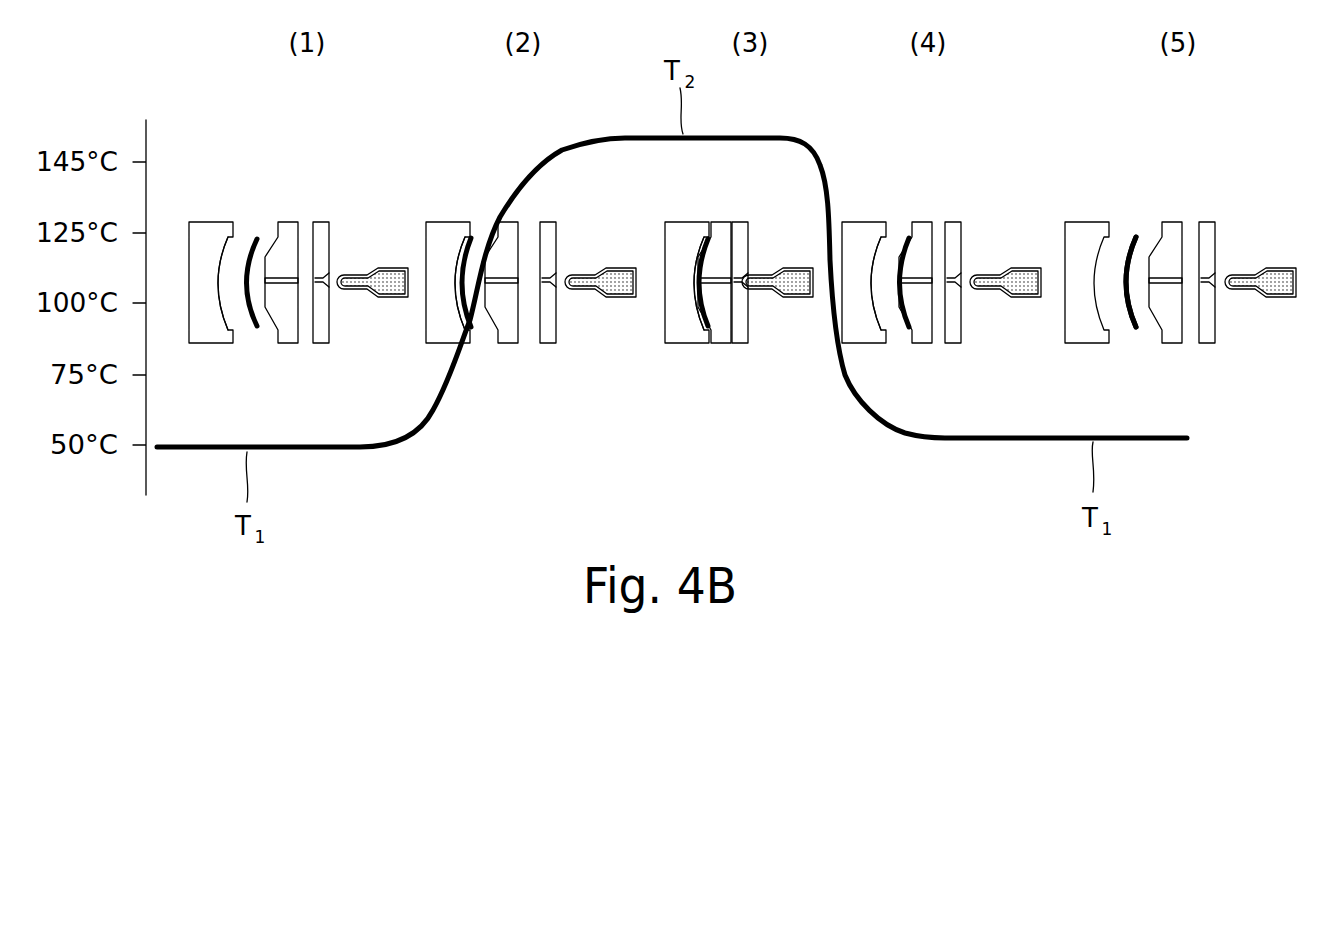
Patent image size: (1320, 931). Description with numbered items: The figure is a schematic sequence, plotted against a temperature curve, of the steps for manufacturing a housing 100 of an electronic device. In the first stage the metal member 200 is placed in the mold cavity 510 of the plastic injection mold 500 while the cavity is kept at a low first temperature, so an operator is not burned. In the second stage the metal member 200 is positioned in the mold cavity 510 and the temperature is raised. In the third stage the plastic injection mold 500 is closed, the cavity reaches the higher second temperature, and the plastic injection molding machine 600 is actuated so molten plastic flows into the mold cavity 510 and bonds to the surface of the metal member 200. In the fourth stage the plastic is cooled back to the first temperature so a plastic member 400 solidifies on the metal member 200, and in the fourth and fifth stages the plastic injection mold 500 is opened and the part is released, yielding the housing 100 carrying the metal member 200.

The housing 100 is at (1134, 224).
The metal member 200 is at (1131, 328).
The plastic member 400 is at (1140, 318).
The plastic injection mold 500 is at (1086, 211).
The mold cavity 510 is at (878, 260).
The plastic injection molding machine 600 is at (1273, 266).